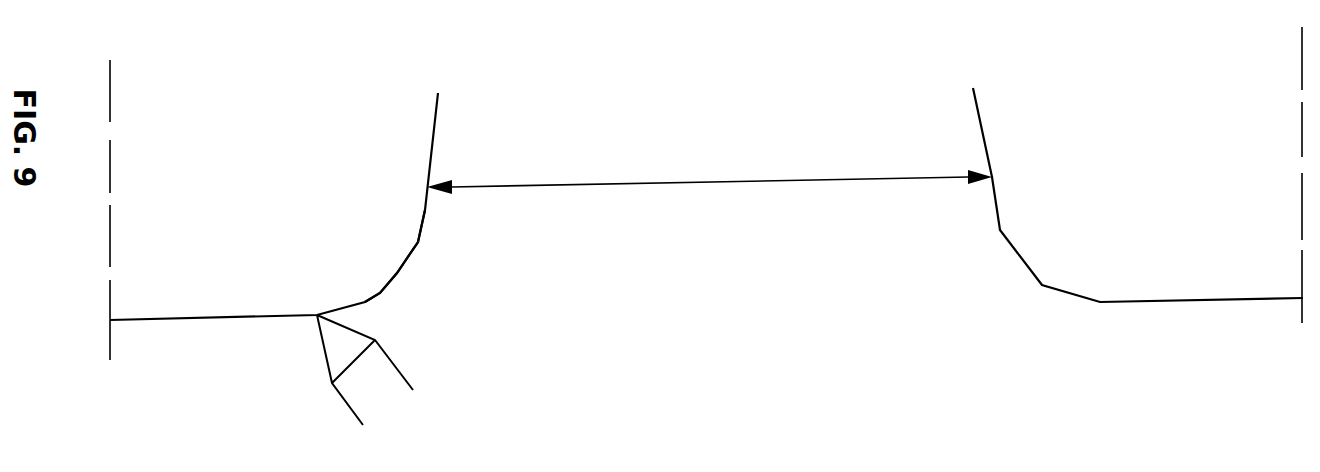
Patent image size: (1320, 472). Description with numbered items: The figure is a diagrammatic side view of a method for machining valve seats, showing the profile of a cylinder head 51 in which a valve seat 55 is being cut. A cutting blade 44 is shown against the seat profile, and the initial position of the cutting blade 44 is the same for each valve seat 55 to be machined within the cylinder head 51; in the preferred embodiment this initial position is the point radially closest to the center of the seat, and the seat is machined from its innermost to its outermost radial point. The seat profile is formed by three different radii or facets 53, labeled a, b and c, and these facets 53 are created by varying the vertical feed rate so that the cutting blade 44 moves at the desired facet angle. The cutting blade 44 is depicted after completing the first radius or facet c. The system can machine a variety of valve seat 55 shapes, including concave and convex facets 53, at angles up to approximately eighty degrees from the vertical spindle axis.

The cylinder head 51 is at (218, 303).
The cutting blade 44 is at (318, 357).
The facets 53 is at (425, 210).
The valve seat 55 is at (709, 195).